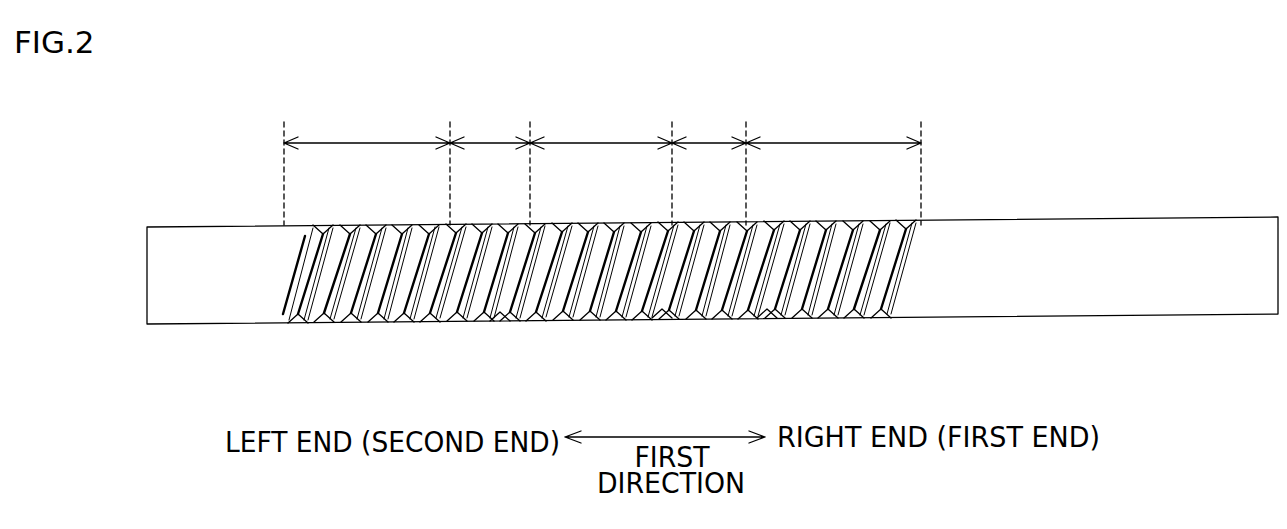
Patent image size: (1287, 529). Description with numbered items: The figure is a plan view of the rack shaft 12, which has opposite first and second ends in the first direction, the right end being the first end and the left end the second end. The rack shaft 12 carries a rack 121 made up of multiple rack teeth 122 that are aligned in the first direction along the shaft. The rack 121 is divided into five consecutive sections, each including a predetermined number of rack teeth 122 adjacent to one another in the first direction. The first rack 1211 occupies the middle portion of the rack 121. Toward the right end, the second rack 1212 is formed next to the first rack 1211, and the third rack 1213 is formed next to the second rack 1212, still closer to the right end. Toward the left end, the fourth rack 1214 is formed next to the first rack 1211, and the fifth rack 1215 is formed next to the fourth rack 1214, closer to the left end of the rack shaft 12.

The rack shaft 12 is at (997, 238).
The rack 121 is at (422, 334).
The rack teeth 122 is at (757, 320).
The first rack 1211 is at (591, 141).
The second rack 1212 is at (713, 141).
The third rack 1213 is at (855, 141).
The fourth rack 1214 is at (491, 141).
The fifth rack 1215 is at (375, 141).